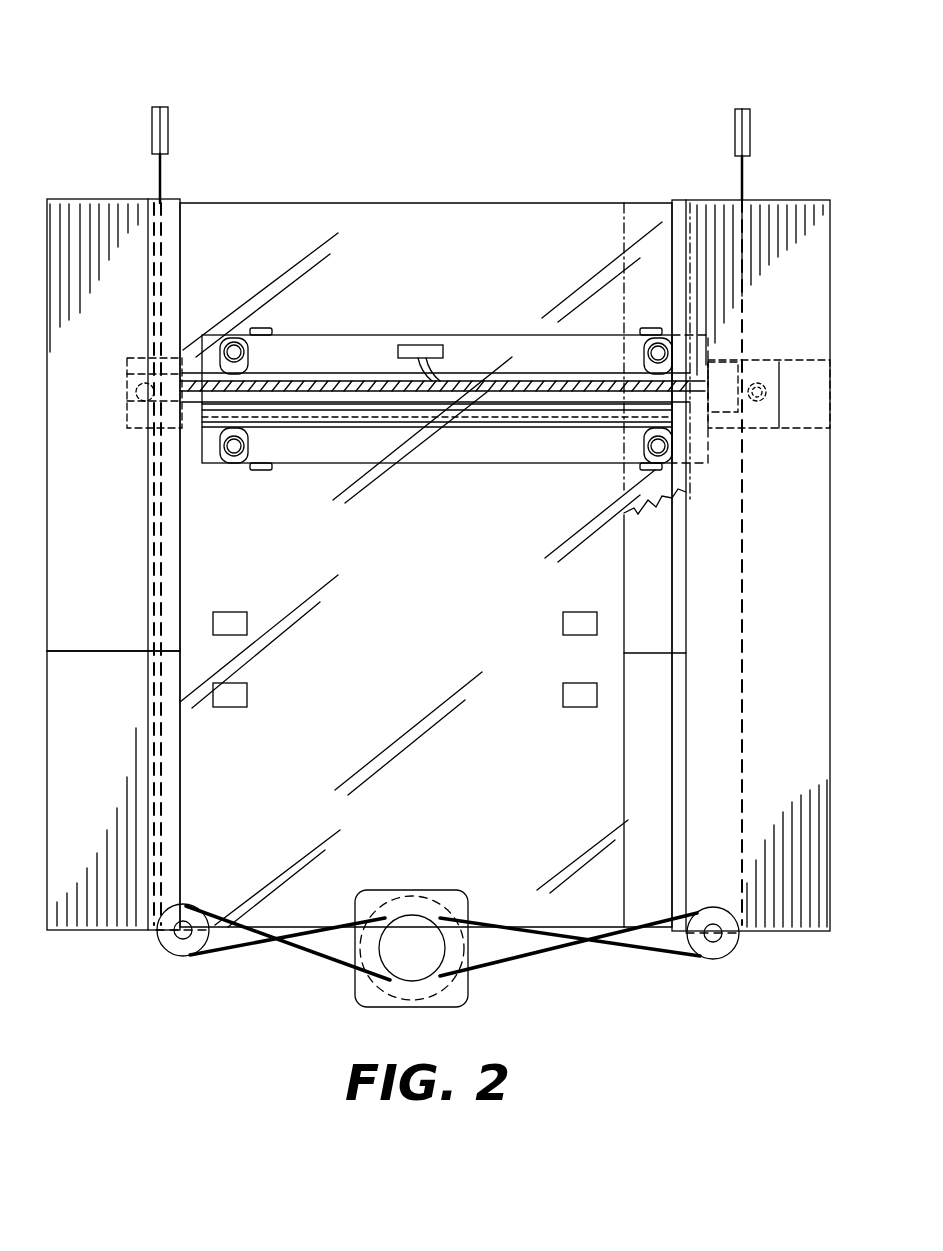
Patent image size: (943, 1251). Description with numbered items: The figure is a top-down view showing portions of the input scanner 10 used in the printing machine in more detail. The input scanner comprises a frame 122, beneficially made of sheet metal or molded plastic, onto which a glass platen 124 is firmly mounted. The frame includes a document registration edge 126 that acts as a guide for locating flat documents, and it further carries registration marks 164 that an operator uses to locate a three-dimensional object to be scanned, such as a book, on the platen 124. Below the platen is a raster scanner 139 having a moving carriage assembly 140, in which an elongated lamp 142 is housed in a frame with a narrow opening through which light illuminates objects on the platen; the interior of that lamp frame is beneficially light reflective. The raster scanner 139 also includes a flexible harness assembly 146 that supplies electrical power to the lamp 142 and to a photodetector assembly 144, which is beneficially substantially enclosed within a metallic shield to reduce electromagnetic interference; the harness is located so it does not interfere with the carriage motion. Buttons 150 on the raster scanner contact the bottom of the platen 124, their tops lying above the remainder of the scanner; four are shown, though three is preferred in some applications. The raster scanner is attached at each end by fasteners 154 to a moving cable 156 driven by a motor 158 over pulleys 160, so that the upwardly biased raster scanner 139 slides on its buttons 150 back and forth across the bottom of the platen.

The input scanner 10 is at (512, 80).
The frame 122 is at (124, 210).
The glass platen 124 is at (384, 214).
The document registration edge 126 is at (672, 201).
The raster scanner 139 is at (512, 305).
The moving carriage assembly 140 is at (310, 456).
The elongated lamp 142 is at (351, 386).
The photodetector assembly 144 is at (387, 422).
The harness assembly 146 is at (431, 347).
The buttons 150 is at (236, 444).
The fasteners 154 is at (138, 405).
The moving cable 156 is at (525, 955).
The motor 158 is at (358, 983).
The pulleys 160 is at (170, 130).
The registration marks 164 is at (93, 650).